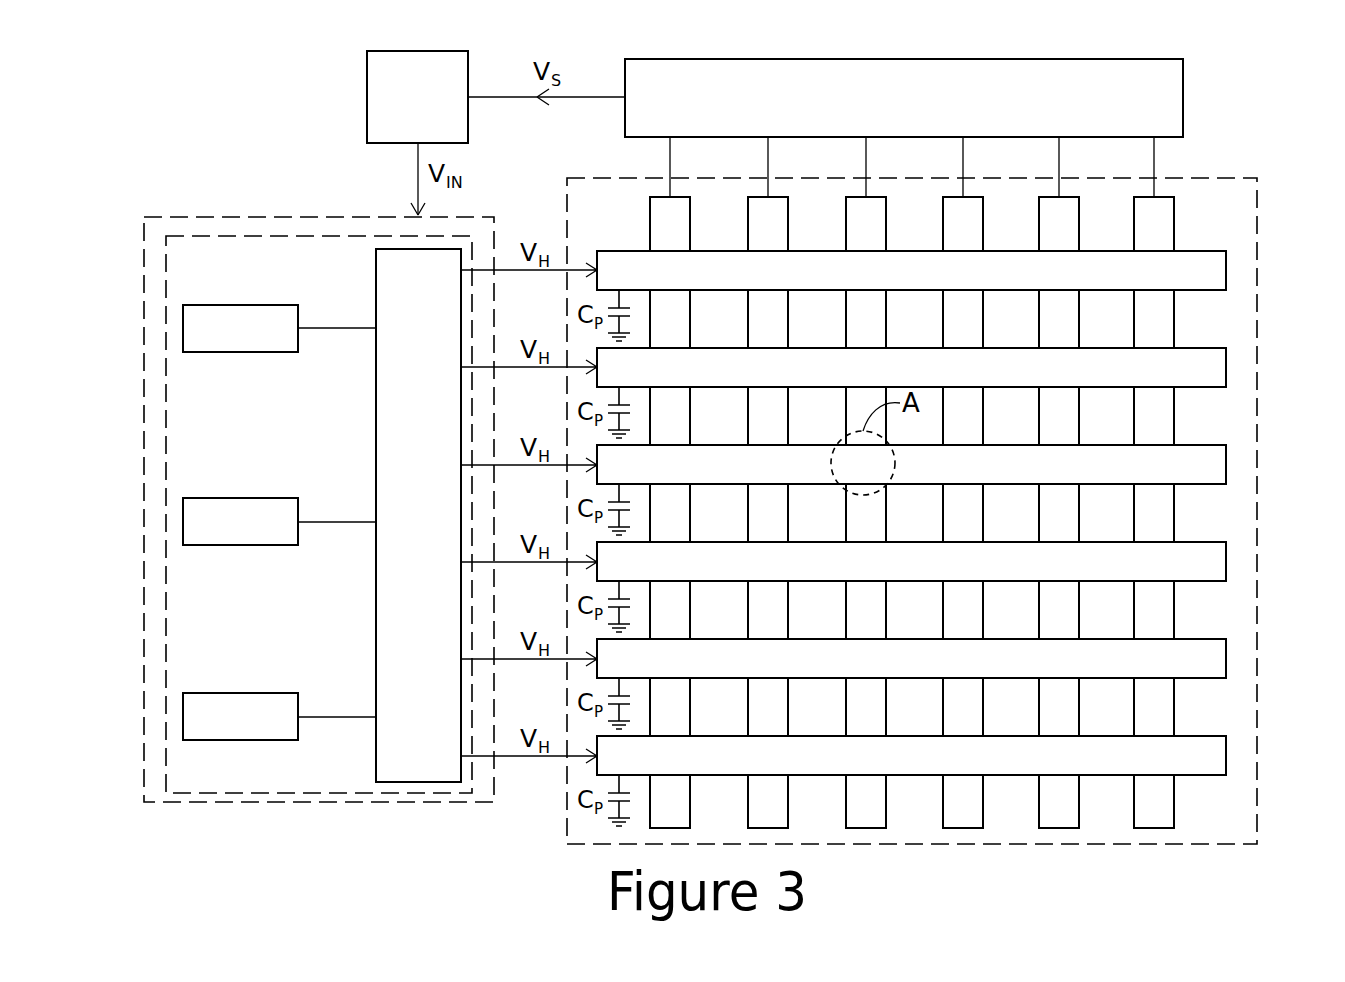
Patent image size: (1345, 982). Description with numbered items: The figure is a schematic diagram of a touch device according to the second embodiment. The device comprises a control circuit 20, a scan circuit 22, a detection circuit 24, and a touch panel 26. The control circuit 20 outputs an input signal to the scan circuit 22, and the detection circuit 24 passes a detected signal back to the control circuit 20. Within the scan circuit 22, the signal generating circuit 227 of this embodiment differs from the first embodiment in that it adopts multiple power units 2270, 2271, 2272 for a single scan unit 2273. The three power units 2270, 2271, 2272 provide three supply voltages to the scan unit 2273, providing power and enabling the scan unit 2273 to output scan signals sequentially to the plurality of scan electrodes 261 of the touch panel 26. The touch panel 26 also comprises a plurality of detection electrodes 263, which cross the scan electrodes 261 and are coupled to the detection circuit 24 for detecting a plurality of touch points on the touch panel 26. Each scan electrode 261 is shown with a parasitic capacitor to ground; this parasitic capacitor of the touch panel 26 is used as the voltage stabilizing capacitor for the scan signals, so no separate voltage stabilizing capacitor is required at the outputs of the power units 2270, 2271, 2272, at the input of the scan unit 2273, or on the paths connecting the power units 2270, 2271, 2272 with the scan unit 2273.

The control circuit 20 is at (440, 51).
The scan circuit 22 is at (485, 217).
The detection circuit 24 is at (1183, 100).
The touch panel 26 is at (1215, 178).
The signal generating circuit 227 is at (258, 236).
The power unit 2270 is at (183, 333).
The power unit 2271 is at (183, 526).
The power unit 2272 is at (183, 722).
The scan unit 2273 is at (410, 249).
The scan electrodes 261 is at (1226, 272).
The detection electrodes 263 is at (1080, 238).